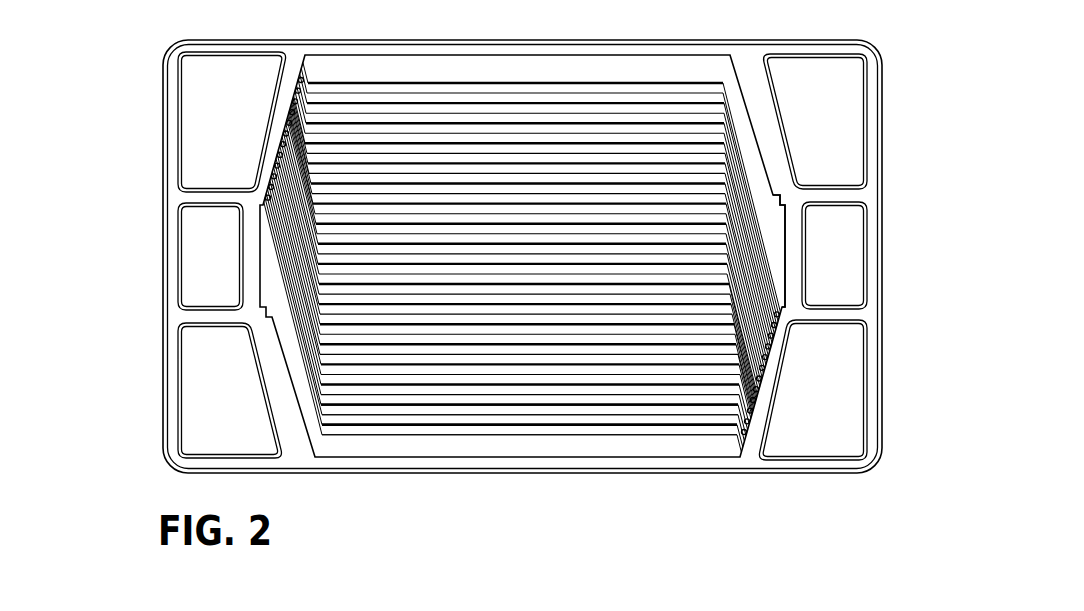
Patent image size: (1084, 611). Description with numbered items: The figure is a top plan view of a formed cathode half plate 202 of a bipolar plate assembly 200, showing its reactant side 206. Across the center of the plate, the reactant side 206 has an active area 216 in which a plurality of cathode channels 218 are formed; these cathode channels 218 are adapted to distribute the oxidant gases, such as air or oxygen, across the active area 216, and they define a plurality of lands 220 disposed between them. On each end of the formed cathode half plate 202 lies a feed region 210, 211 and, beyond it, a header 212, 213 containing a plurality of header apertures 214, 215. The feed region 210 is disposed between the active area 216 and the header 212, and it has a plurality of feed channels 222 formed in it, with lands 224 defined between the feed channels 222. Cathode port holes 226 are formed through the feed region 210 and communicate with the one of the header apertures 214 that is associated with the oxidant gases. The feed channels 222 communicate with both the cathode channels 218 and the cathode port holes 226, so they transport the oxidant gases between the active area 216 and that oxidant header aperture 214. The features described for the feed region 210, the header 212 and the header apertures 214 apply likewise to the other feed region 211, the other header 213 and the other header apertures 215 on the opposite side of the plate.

The fuel cell assembly 200 is at (123, 102).
The formed cathode half plate 202 is at (523, 257).
The reactant side 206 is at (386, 83).
The feed region 210 is at (765, 222).
The feed region 211 is at (283, 280).
The header 212 is at (851, 257).
The header 213 is at (186, 255).
The header apertures 214 is at (866, 142).
The header apertures 215 is at (178, 145).
The active area 216 is at (630, 200).
The cathode channels 218 is at (710, 407).
The lands 220 is at (655, 430).
The feed channels 222 is at (743, 157).
The lands 224 is at (750, 190).
The cathode port holes 226 is at (761, 358).